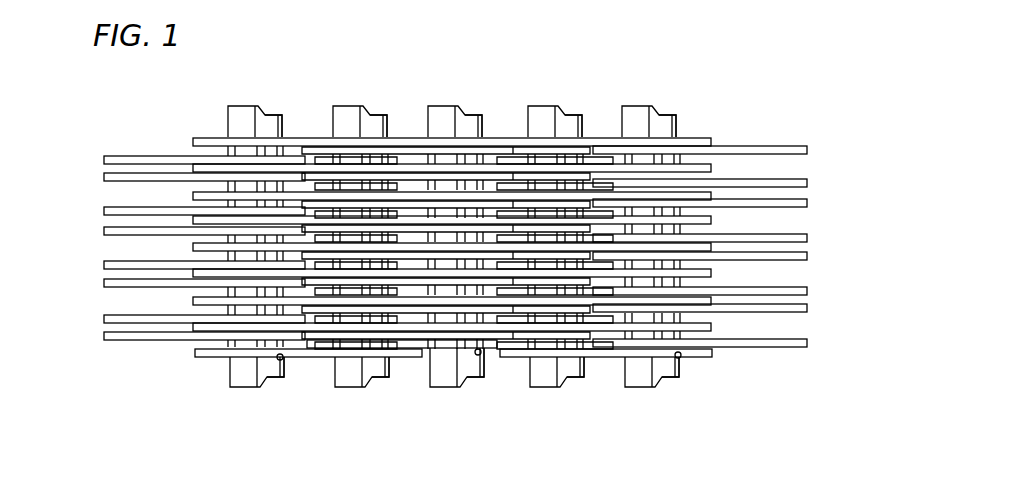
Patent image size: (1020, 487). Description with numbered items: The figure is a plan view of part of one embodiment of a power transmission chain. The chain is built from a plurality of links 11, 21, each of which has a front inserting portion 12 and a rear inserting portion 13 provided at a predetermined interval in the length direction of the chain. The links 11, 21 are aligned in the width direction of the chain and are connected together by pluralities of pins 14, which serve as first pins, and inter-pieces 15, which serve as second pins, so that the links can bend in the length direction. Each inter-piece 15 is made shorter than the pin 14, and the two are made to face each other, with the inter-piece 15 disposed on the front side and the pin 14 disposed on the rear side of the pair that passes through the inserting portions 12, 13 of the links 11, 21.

The link 11 is at (448, 345).
The front inserting portion 12 is at (477, 373).
The rear inserting portion 13 is at (282, 360).
The pin 14 is at (248, 368).
The inter-piece 15 is at (275, 368).
The link 21 is at (212, 360).